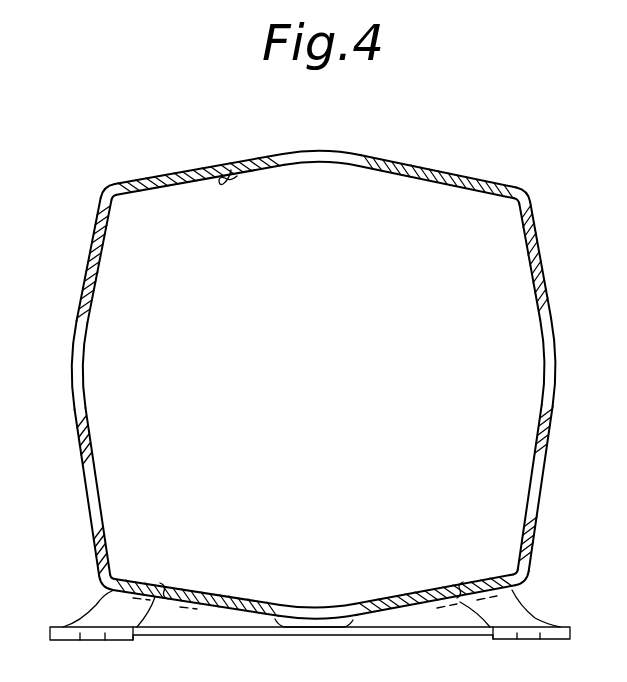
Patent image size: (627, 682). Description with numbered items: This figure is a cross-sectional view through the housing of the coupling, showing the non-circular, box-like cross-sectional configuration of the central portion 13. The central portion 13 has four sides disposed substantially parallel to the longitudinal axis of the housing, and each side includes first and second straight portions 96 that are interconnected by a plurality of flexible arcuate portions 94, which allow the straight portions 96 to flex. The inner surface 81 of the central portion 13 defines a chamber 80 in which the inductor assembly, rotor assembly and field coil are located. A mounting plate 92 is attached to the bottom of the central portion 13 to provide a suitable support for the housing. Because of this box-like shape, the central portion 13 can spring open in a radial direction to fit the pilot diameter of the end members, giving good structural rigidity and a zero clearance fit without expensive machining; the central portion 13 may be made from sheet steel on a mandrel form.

The central portion 13 is at (315, 362).
The chamber 80 is at (178, 382).
The inner surface 81 is at (231, 170).
The mounting plate 92 is at (70, 627).
The flexible arcuate portions 94 is at (107, 185).
The first and second straight portions 96 is at (153, 170).